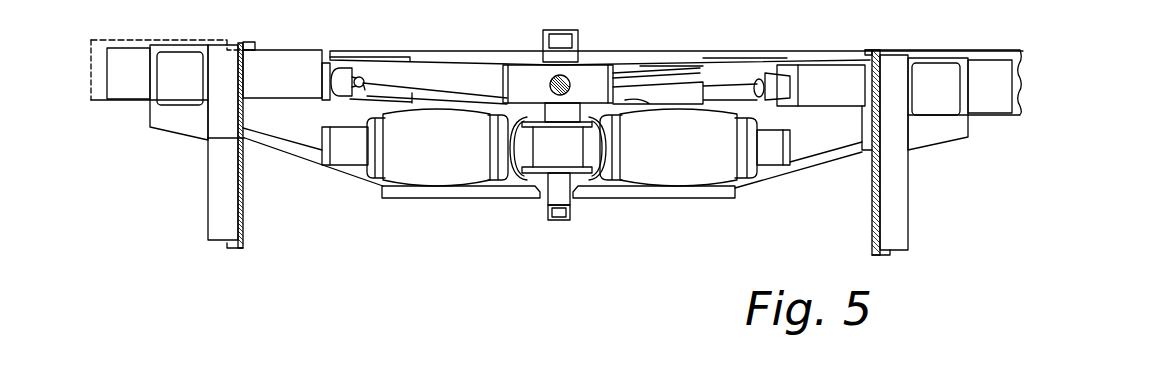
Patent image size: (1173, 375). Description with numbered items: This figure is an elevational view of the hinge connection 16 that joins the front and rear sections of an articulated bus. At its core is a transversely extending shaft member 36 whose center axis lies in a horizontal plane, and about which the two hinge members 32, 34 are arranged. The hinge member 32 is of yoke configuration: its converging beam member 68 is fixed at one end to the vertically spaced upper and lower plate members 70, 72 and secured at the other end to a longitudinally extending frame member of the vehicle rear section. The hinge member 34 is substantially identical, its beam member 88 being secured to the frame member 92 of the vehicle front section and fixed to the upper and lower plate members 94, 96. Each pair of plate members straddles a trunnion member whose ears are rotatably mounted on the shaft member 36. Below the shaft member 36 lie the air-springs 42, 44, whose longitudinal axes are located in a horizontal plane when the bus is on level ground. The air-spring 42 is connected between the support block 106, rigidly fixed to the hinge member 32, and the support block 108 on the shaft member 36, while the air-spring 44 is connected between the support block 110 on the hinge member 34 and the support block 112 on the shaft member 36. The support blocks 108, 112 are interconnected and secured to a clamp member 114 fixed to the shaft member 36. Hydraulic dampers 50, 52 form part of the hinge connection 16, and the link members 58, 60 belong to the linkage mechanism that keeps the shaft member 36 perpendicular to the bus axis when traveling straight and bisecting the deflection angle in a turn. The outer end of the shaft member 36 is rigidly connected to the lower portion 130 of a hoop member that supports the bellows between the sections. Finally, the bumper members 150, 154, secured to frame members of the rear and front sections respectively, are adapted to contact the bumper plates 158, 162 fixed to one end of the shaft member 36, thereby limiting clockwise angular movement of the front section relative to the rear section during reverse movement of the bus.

The hinge connection 16 is at (130, 53).
The hinge member 32 is at (262, 147).
The hinge member 34 is at (838, 160).
The shaft member 36 is at (566, 80).
The air-spring 42 is at (407, 175).
The air-spring 44 is at (698, 178).
The hydraulic damper 50 is at (440, 98).
The hydraulic damper 52 is at (668, 93).
The link member 58 is at (368, 65).
The link member 60 is at (695, 70).
The beam member 68 is at (293, 142).
The upper plate member 70 is at (432, 52).
The lower plate member 72 is at (500, 198).
The beam member 88 is at (813, 153).
The frame member 92 is at (1016, 53).
The upper plate member 94 is at (668, 58).
The lower plate member 96 is at (667, 198).
The support block 106 is at (346, 155).
The support block 108 is at (532, 173).
The support block 110 is at (779, 158).
The support block 112 is at (603, 180).
The clamp member 114 is at (572, 112).
The lower portion of hoop member 130 is at (567, 220).
The bumper member 150 is at (276, 65).
The bumper member 154 is at (822, 73).
The bumper plate 158 is at (497, 72).
The bumper plate 162 is at (622, 68).